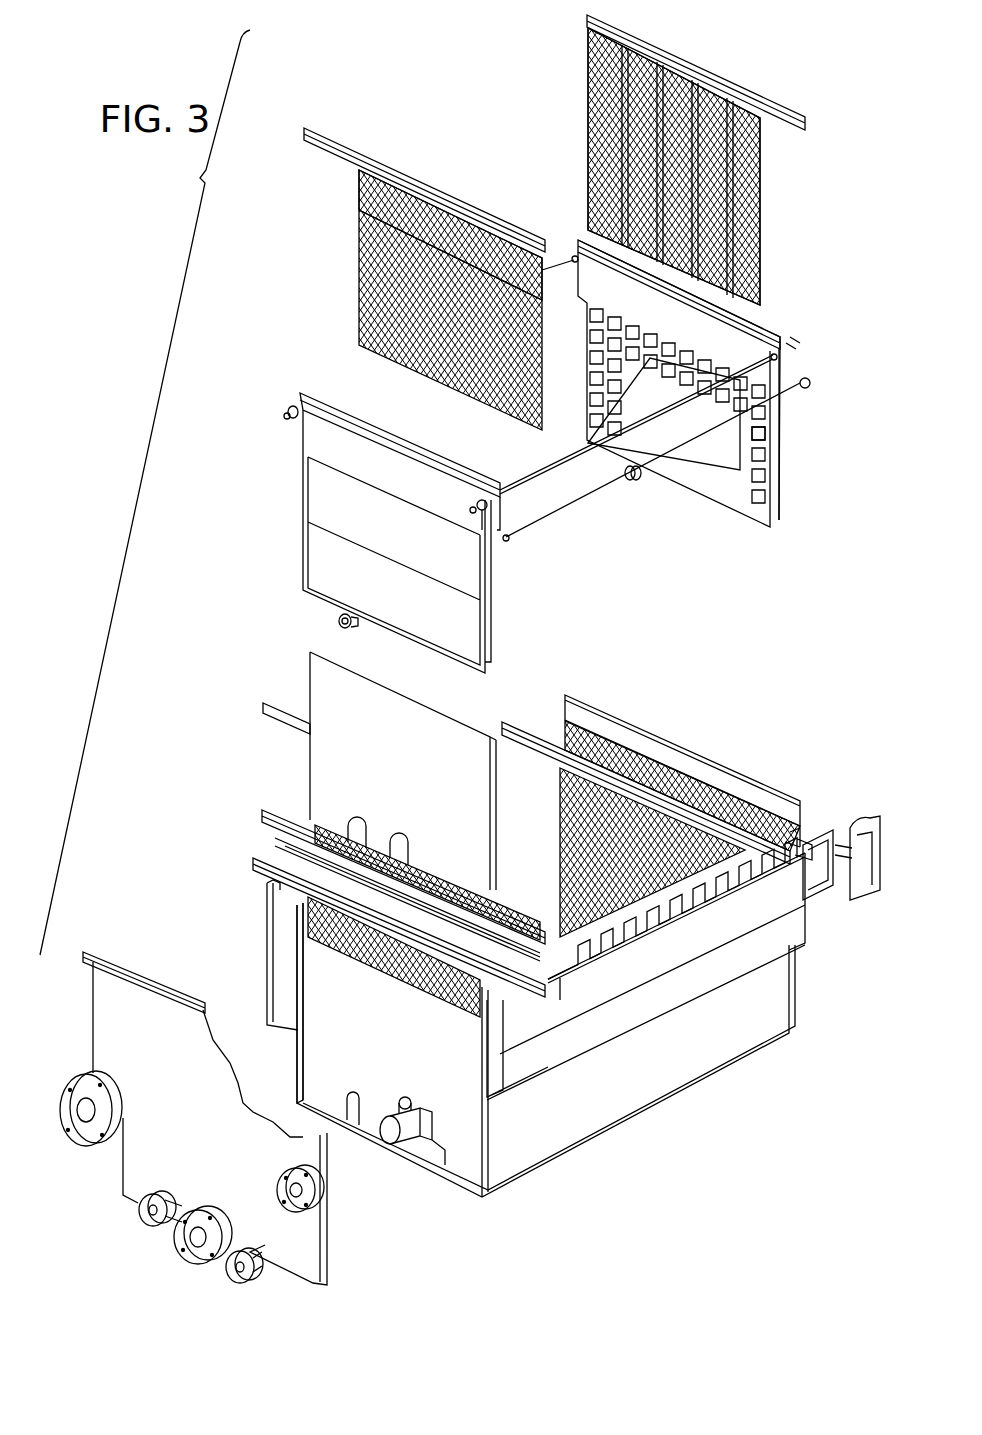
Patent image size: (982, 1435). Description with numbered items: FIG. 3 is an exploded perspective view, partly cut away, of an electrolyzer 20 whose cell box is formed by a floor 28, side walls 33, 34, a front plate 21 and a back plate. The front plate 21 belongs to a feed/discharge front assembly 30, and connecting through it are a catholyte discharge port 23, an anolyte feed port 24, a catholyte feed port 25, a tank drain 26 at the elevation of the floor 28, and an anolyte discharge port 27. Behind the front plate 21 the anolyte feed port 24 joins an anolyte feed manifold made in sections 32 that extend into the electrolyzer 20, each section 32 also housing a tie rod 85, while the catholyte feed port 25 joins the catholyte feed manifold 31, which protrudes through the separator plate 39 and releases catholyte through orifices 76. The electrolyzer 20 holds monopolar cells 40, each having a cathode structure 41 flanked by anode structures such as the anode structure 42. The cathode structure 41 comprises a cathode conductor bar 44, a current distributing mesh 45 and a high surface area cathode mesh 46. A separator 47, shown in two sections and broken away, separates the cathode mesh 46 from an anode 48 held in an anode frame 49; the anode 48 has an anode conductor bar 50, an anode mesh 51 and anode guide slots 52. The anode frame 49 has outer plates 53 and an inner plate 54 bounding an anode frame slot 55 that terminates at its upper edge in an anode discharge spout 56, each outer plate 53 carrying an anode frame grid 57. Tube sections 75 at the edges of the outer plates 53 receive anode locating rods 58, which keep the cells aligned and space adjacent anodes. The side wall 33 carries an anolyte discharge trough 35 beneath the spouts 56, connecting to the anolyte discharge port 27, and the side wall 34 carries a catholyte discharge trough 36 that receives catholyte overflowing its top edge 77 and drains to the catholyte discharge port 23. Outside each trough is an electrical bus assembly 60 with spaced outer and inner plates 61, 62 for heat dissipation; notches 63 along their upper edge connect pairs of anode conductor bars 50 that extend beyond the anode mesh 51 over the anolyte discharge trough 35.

The electrolyzer 20 is at (170, 803).
The front plate 21 is at (110, 1020).
The catholyte discharge port 23 is at (86, 1146).
The anolyte feed port 24 is at (140, 1208).
The catholyte feed port 25 is at (175, 1245).
The tank drain 26 is at (225, 1278).
The anolyte discharge port 27 is at (313, 1210).
The floor 28 is at (425, 1155).
The front assembly 30 is at (200, 920).
The catholyte feed manifold 31 is at (393, 1135).
The anolyte feed manifold section 32 is at (630, 480).
The side wall 33 is at (502, 1147).
The side wall 34 is at (298, 1065).
The anolyte discharge trough 35 is at (492, 1065).
The catholyte discharge trough 36 is at (272, 960).
The separator plate 39 is at (312, 752).
The monopolar cell 40 is at (318, 84).
The cathode structure 41 is at (300, 253).
The anode structure 42 is at (265, 516).
The cathode conductor bar 44 is at (345, 133).
The current distributing mesh 45 is at (360, 192).
The high surface area cathode mesh 46 is at (360, 302).
The separator 47 is at (730, 480).
The anode 48 is at (588, 105).
The anode frame 49 is at (575, 237).
The anode conductor bar 50 is at (775, 110).
The anode mesh 51 is at (750, 185).
The anode guide slots 52 is at (725, 222).
The outer plate 53 is at (773, 345).
The inner plate 54 is at (795, 343).
The anode frame slot 55 is at (763, 330).
The anode discharge spout 56 is at (808, 385).
The anode frame grid 57 is at (760, 425).
The anode locating rods 58 is at (323, 390).
The electrical bus assembly 60 is at (852, 795).
The outer plate 61 is at (857, 887).
The inner plate 62 is at (880, 885).
The notches 63 is at (652, 930).
The tube section 75 is at (288, 412).
The orifices 76 is at (408, 1102).
The top edge 77 is at (300, 932).
The tie rod 85 is at (508, 540).